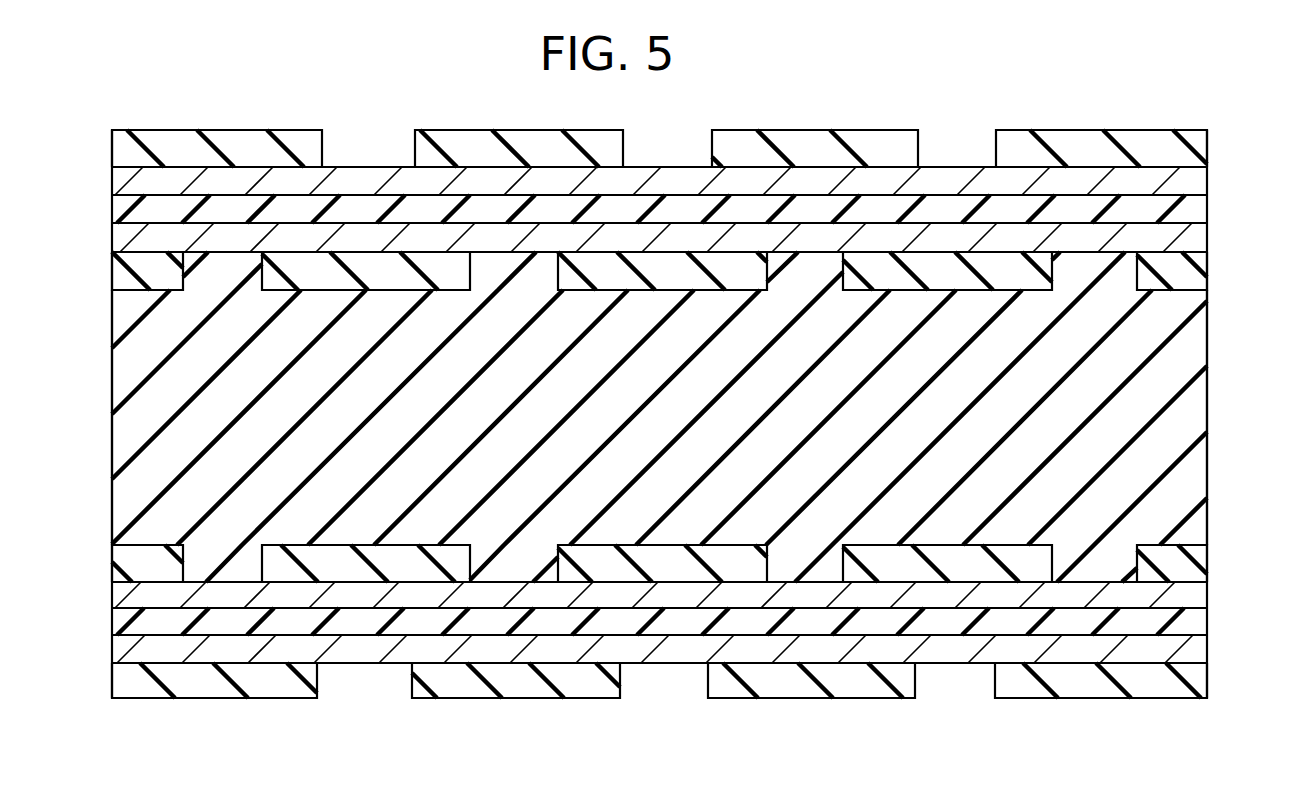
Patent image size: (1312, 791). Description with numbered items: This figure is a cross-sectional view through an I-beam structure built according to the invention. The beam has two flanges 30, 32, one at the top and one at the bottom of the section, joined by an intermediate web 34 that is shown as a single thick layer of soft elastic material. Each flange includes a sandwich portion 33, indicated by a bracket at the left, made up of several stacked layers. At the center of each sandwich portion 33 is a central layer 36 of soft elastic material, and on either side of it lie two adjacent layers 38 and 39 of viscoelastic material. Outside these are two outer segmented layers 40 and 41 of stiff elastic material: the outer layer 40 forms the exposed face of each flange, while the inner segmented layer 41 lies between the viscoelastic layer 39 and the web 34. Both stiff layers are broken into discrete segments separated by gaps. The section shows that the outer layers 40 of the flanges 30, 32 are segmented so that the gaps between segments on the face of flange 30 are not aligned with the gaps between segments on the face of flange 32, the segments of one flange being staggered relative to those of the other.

The flange 30 is at (118, 129).
The flange 32 is at (123, 698).
The sandwich portion 33 is at (104, 170).
The intermediate web 34 is at (110, 456).
The central layer 36 is at (1207, 206).
The viscoelastic layer 38 is at (1210, 182).
The viscoelastic layer 39 is at (1207, 241).
The outer segmented layer 40 is at (1208, 148).
The outer segmented layer 41 is at (1208, 272).